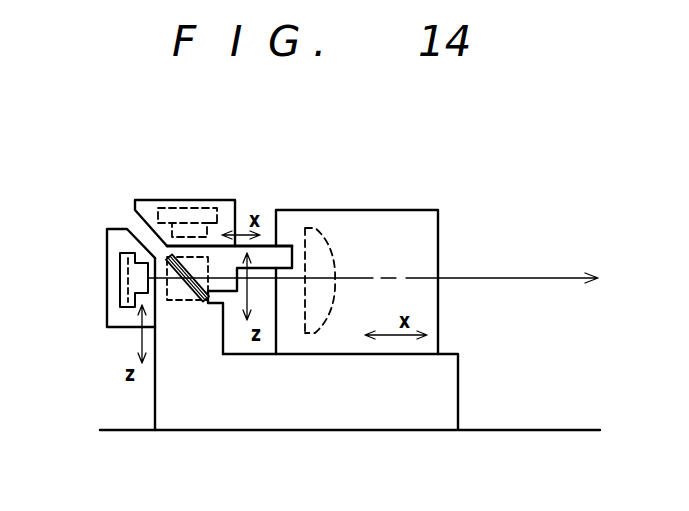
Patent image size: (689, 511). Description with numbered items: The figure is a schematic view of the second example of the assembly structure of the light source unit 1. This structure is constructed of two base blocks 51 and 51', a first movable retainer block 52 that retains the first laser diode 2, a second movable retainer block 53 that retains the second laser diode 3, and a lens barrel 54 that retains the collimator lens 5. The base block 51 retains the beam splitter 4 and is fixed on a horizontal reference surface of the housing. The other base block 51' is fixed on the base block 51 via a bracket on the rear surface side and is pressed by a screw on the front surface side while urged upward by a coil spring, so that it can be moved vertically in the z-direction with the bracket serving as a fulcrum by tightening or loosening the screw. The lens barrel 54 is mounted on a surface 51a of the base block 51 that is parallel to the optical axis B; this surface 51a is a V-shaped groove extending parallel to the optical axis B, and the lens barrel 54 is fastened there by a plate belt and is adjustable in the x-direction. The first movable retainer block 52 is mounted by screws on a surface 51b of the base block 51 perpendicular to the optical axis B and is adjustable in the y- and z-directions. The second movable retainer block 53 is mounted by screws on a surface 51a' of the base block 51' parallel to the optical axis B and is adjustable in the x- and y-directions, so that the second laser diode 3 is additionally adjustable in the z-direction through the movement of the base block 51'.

The light source unit 1 is at (408, 150).
The first laser diode 2 is at (120, 292).
The second laser diode 3 is at (201, 201).
The beam splitter 4 is at (188, 303).
The collimator lens 5 is at (332, 247).
The base block 51 is at (350, 422).
The surface 51a is at (285, 377).
The surface 51b is at (155, 380).
The base block 51' is at (260, 256).
The surface 51a' is at (229, 185).
The first movable retainer block 52 is at (107, 254).
The second movable retainer block 53 is at (156, 200).
The lens barrel 54 is at (402, 209).
The optical axis B is at (535, 278).